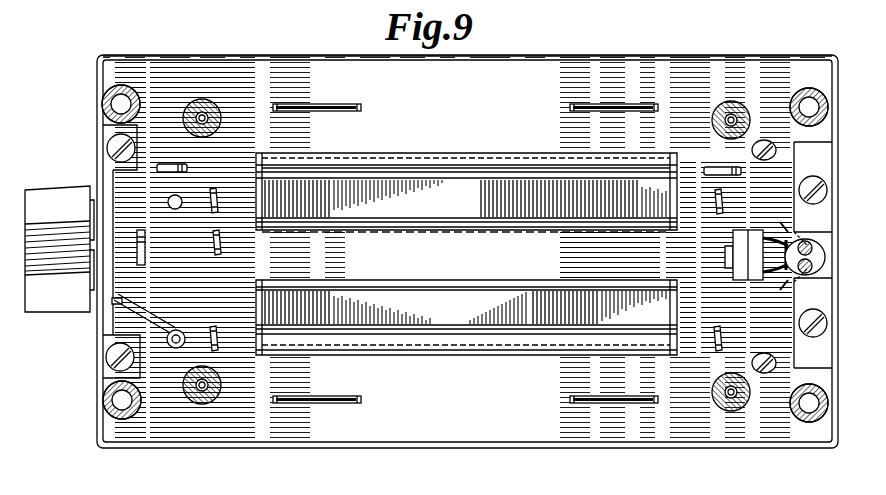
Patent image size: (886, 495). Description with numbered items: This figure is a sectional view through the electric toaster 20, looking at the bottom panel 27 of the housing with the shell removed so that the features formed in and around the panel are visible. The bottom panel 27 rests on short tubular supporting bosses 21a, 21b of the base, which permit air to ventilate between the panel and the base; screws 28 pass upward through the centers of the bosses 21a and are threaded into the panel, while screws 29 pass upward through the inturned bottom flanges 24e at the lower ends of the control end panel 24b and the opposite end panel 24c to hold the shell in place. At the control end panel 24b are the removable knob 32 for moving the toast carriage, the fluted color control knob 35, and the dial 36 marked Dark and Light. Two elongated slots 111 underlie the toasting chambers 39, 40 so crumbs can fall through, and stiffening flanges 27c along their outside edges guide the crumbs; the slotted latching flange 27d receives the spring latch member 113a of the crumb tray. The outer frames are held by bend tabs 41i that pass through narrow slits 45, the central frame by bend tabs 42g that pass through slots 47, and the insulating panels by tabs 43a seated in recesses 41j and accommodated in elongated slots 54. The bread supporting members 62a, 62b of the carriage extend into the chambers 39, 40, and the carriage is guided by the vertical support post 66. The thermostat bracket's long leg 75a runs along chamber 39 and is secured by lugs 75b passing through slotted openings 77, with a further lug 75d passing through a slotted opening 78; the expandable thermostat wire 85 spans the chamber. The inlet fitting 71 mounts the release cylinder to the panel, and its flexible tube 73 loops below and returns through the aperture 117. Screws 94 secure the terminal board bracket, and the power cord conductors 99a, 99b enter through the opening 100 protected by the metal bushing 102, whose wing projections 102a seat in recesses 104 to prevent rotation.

The electric toaster 20 is at (646, 43).
The tubular supporting boss 21a is at (205, 112).
The tubular supporting boss 21b is at (103, 100).
The control end panel 24b is at (97, 435).
The opposite end panel 24c is at (795, 337).
The bottom flange 24e is at (110, 176).
The bottom panel 27 is at (572, 57).
The stiffening flange 27c is at (355, 158).
The slotted latching flange 27d is at (734, 278).
The screw 28 is at (215, 105).
The screw 29 is at (108, 143).
The removable knob 32 is at (38, 200).
The control knob 35 is at (45, 300).
The escutcheon plate 36 is at (88, 298).
The toasting chamber 39 is at (440, 165).
The toasting chamber 40 is at (425, 338).
The bend tab 41i is at (216, 205).
The recess 41j is at (320, 106).
The bend tab 42g is at (220, 245).
The tab 43a is at (290, 104).
The slit 45 is at (211, 196).
The slot 47 is at (214, 236).
The elongated slot 54 is at (360, 108).
The bread supporting member 62a is at (478, 195).
The bread supporting member 62b is at (478, 325).
The vertical support post 66 is at (173, 209).
The inlet fitting 71 is at (168, 347).
The flexible tube 73 is at (140, 318).
The long leg 75a is at (385, 168).
The lug 75b is at (160, 166).
The lug 75d is at (146, 258).
The slotted opening 77 is at (187, 168).
The slotted opening 78 is at (141, 230).
The thermostatic element 85 is at (415, 172).
The screw 94 is at (760, 140).
The conductor 99a is at (820, 248).
The conductor 99b is at (822, 270).
The opening 100 is at (812, 247).
The metal bushing 102 is at (812, 265).
The wing projection 102a is at (785, 240).
The recess 104 is at (788, 236).
The elongated slot 111 is at (378, 282).
The spring latch member 113a is at (738, 235).
The aperture 117 is at (117, 298).